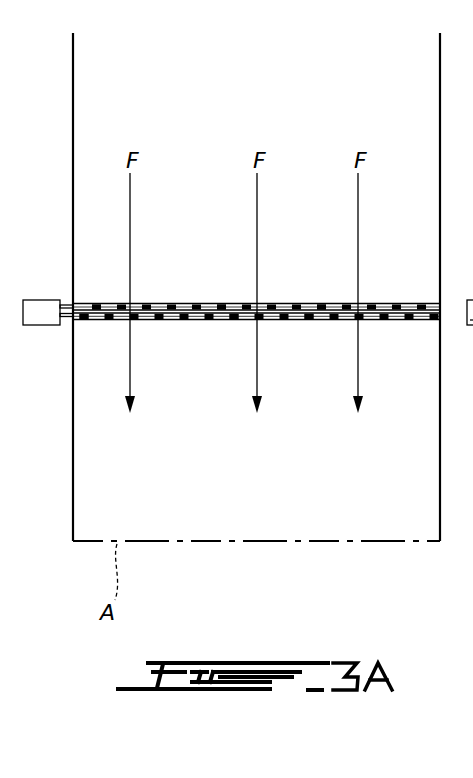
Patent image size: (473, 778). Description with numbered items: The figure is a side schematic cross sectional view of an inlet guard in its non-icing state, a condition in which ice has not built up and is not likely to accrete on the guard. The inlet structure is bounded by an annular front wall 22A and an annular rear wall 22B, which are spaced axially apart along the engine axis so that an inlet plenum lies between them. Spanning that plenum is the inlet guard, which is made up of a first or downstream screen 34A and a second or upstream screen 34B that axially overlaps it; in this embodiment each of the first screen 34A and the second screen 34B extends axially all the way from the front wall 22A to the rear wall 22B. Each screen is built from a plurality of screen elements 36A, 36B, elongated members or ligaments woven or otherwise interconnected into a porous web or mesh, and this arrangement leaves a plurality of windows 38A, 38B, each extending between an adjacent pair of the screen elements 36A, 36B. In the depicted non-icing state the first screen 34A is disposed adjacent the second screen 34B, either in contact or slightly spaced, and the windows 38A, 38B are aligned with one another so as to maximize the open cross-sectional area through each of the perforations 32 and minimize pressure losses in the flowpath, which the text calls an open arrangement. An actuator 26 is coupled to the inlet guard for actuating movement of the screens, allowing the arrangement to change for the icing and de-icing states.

The front wall 22A is at (73, 78).
The rear wall 22B is at (440, 77).
The actuator 26 is at (48, 313).
The perforations 32 is at (180, 286).
The first screen 34A is at (83, 323).
The second screen 34B is at (83, 302).
The screen elements 36A is at (320, 322).
The screen elements 36B is at (320, 300).
The windows 38A is at (232, 320).
The windows 38B is at (233, 300).